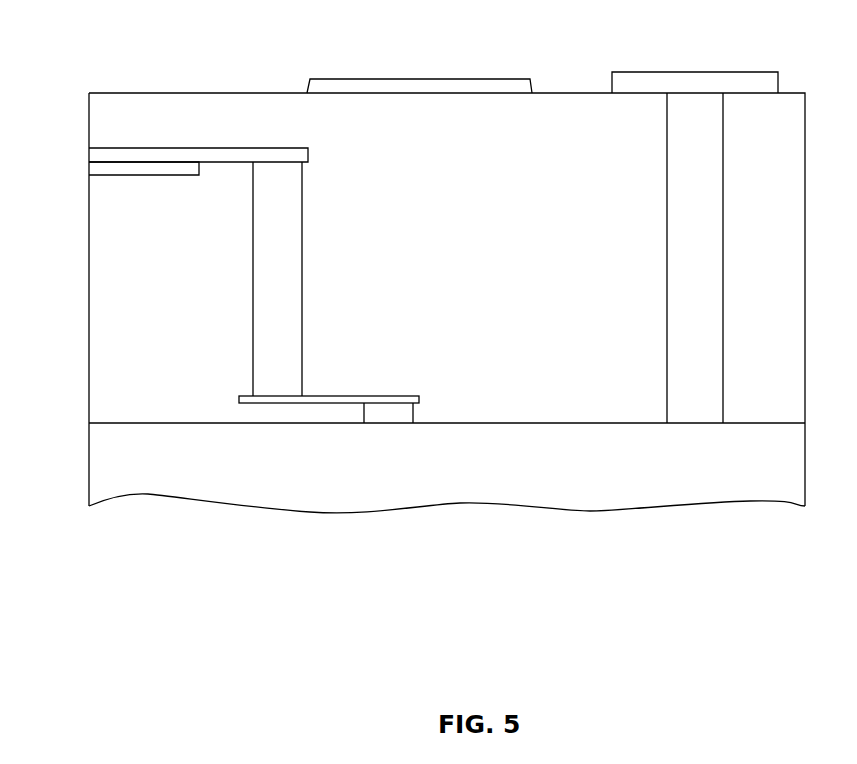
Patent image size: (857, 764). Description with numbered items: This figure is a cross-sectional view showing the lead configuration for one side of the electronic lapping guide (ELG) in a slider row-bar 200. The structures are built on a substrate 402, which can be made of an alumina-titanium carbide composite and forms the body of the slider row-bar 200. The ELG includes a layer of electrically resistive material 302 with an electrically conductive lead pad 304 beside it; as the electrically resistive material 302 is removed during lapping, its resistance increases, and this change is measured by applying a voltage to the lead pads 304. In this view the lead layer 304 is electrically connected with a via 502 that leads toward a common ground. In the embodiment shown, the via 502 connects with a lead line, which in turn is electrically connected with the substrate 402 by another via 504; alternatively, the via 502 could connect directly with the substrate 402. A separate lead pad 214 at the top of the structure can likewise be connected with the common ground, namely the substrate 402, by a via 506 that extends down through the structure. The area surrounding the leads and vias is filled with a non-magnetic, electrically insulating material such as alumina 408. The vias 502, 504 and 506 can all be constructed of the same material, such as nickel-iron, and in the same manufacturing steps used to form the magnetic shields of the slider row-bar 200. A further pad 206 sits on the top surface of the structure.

The slider row-bar 200 is at (412, 270).
The contact pad 206 is at (370, 79).
The lead pad 214 is at (703, 72).
The lead pad 304 is at (173, 148).
The electrically resistive material 302 is at (143, 176).
The via 502 is at (302, 285).
The via 504 is at (413, 414).
The via 506 is at (667, 240).
The alumina 408 is at (540, 163).
The substrate 402 is at (397, 466).